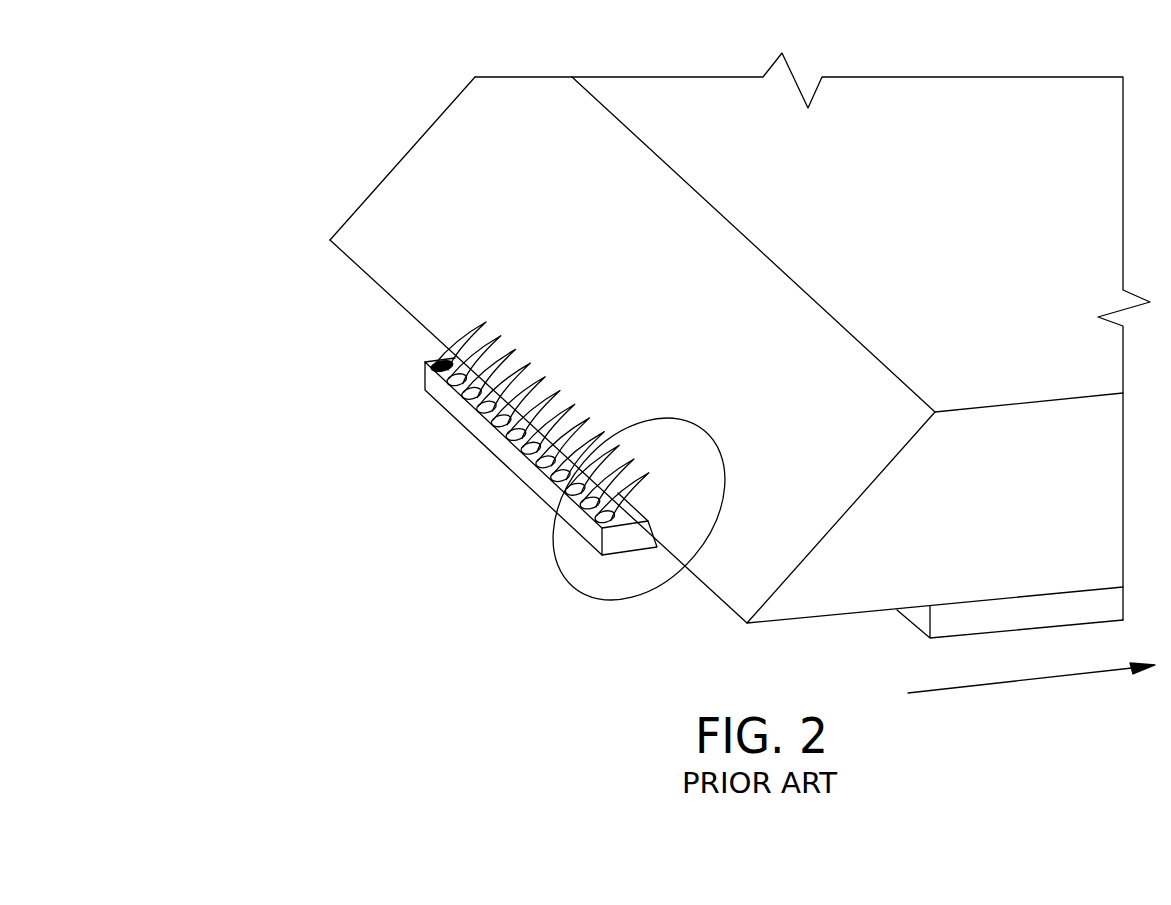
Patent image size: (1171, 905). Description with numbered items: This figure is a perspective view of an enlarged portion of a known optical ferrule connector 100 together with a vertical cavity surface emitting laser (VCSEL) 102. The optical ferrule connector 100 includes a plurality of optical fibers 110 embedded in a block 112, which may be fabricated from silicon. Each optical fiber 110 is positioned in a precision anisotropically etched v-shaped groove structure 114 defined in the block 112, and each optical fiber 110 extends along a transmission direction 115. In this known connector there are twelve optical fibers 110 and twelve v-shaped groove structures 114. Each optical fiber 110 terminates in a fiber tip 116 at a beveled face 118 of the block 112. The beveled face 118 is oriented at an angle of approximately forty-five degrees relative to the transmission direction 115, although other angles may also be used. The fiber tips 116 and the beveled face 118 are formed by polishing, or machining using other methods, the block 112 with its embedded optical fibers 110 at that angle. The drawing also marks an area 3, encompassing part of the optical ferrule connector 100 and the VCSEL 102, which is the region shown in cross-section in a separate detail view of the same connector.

The optical ferrule connector 100 is at (382, 115).
The vertical cavity surface emitting laser (VCSEL) 102 is at (527, 472).
The optical fibers 110 is at (460, 343).
The block 112 is at (415, 184).
The v-shaped groove structure 114 is at (583, 395).
The transmission direction 115 is at (1033, 680).
The fiber tip 116 is at (435, 366).
The beveled face 118 is at (418, 208).
The area 3 is at (580, 592).